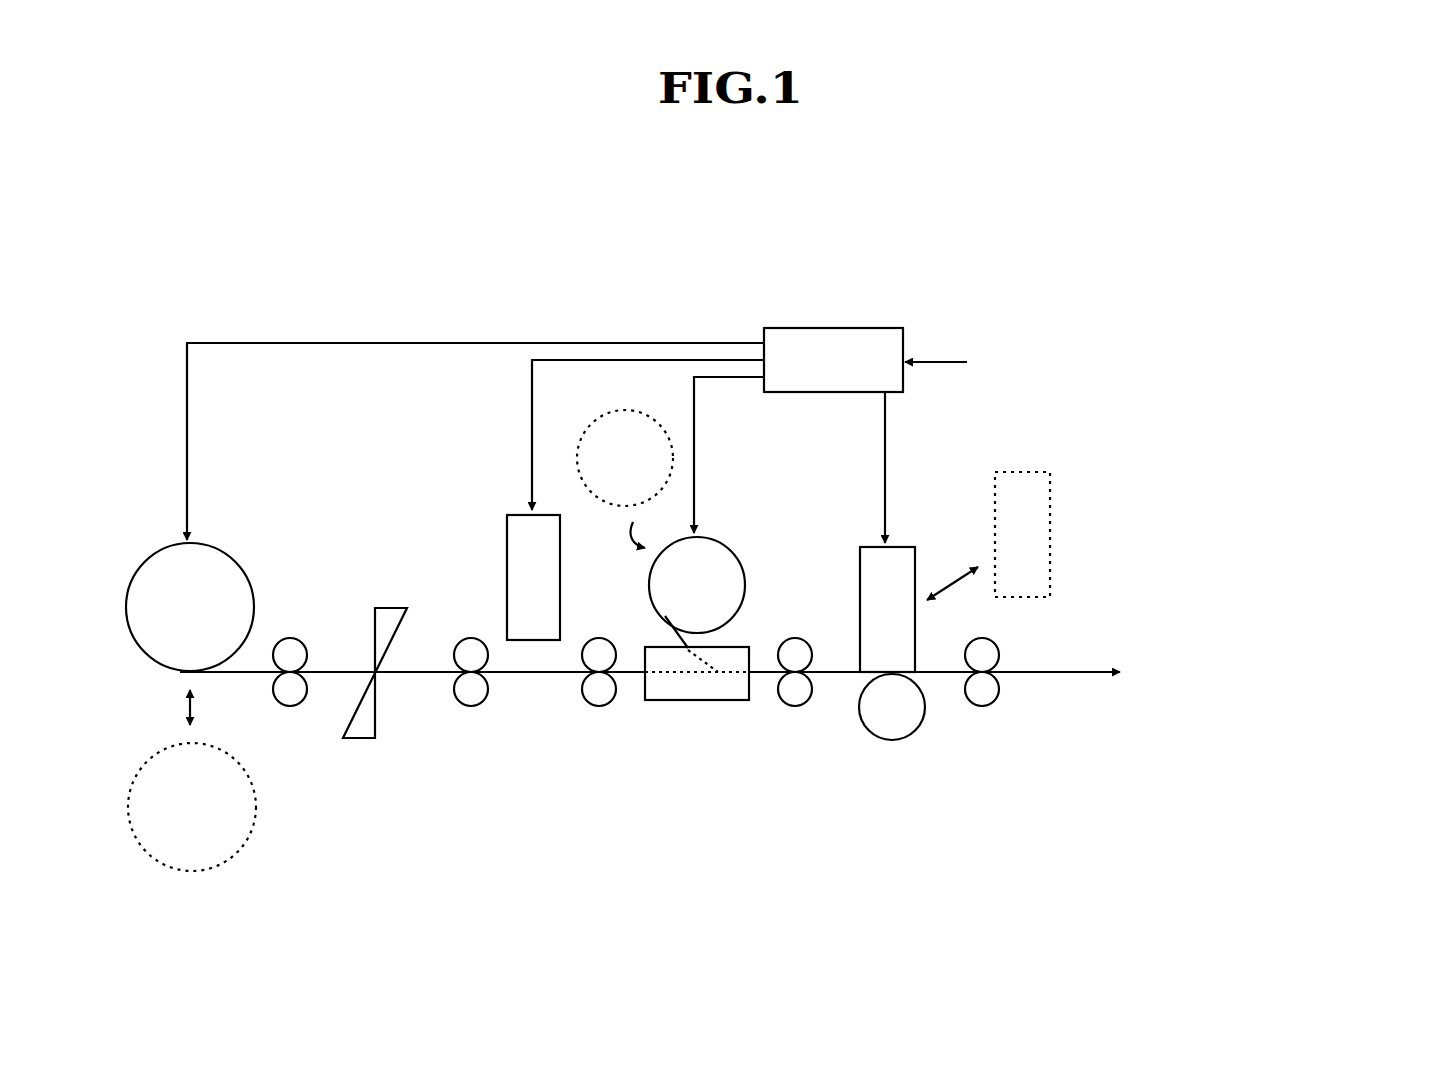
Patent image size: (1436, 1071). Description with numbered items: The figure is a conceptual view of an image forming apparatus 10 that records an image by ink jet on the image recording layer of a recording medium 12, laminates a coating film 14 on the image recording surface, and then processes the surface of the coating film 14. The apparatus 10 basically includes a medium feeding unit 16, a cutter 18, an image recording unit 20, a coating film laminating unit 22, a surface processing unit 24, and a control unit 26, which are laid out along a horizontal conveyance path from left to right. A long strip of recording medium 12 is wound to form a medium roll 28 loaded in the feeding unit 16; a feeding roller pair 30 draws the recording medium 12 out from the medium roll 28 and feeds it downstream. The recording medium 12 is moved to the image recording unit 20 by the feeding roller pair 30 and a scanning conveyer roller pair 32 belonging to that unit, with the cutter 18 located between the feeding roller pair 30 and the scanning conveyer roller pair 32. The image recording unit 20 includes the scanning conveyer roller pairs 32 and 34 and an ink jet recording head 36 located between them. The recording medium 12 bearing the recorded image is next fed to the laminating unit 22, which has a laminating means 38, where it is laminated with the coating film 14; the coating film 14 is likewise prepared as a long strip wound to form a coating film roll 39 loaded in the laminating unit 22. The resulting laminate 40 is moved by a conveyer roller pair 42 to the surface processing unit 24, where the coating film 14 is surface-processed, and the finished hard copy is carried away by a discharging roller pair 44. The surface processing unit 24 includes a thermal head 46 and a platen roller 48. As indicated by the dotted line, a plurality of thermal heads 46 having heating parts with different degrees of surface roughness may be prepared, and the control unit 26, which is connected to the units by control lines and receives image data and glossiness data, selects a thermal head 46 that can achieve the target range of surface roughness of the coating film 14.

The image forming apparatus 10 is at (993, 280).
The image recording medium 12 is at (337, 668).
The coating film 14 is at (672, 645).
The medium feeding unit 16 is at (125, 533).
The cutter 18 is at (393, 606).
The image recording unit 20 is at (536, 752).
The coating film laminating unit 22 is at (700, 752).
The surface processing unit 24 is at (890, 758).
The control unit 26 is at (780, 393).
The medium roll 28 is at (244, 570).
The feeding roller pair 30 is at (291, 706).
The scanning conveyer roller pair 32 is at (471, 706).
The scanning conveyer roller pair 34 is at (600, 706).
The ink jet recording head 36 is at (506, 524).
The laminating means 38 is at (733, 702).
The coating film roll 39 is at (733, 552).
The laminate 40 is at (830, 670).
The conveyer roller pair 42 is at (796, 706).
The discharging roller pair 44 is at (983, 706).
The thermal head 46 is at (917, 556).
The platen roller 48 is at (906, 731).